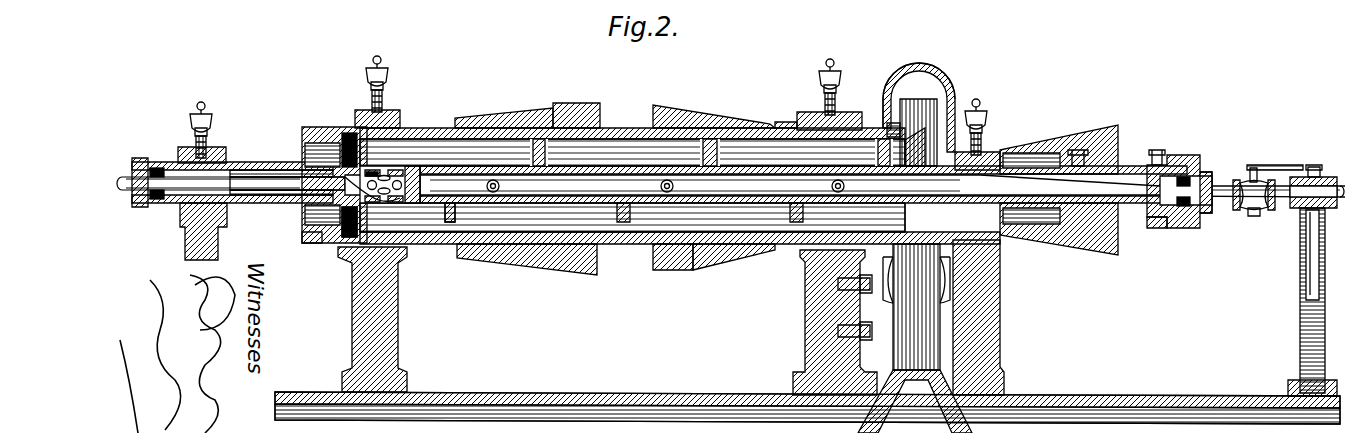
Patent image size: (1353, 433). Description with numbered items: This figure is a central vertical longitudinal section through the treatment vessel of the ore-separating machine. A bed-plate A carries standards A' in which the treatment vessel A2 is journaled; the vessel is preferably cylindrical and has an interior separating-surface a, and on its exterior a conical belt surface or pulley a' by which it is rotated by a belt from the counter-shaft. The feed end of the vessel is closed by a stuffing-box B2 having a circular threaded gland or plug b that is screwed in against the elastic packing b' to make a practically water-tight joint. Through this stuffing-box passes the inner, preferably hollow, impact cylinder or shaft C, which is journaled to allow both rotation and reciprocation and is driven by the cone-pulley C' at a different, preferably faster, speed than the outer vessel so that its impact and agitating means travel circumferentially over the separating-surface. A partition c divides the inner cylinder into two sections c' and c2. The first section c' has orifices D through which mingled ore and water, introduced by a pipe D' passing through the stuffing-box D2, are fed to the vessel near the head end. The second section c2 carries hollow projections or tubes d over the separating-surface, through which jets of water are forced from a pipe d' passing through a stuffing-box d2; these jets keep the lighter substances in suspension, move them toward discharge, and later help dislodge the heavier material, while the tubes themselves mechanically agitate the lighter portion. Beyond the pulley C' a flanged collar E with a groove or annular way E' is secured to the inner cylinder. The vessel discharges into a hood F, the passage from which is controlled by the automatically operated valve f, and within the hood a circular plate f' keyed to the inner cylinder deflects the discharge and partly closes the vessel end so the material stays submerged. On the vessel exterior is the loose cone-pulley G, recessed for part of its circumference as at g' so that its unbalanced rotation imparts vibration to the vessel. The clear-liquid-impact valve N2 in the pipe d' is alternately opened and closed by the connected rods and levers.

The bed-plate A is at (807, 393).
The standards A' is at (671, 317).
The treatment vessel A2 is at (650, 128).
The stuffing-box B2 is at (310, 126).
The threaded gland b is at (295, 253).
The elastic packing b' is at (334, 256).
The inner impact cylinder C is at (773, 222).
The cone-pulley C' is at (1059, 173).
The partition c is at (845, 145).
The first section of inner cylinder c' is at (287, 204).
The second section of inner cylinder c2 is at (720, 225).
The orifices D is at (398, 123).
The feed pipe D' is at (231, 163).
The stuffing-box D2 is at (134, 204).
The hollow projections or tubes d is at (469, 248).
The liquid supply pipe d' is at (1264, 178).
The stuffing-box d2 is at (1200, 208).
The flanged collar E is at (1148, 240).
The annular way E' is at (1179, 166).
The hood F is at (907, 124).
The discharge valve f is at (930, 338).
The circular deflecting plate f' is at (906, 95).
The loose cone-pulley G is at (556, 108).
The ring g' is at (582, 97).
The separating-surface a is at (546, 273).
The conical belt surface a' is at (778, 97).
The clear-liquid-impact valve N2 is at (1268, 210).